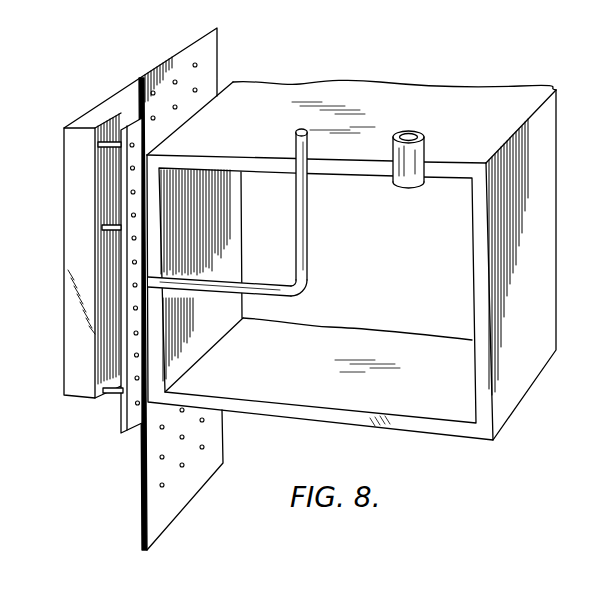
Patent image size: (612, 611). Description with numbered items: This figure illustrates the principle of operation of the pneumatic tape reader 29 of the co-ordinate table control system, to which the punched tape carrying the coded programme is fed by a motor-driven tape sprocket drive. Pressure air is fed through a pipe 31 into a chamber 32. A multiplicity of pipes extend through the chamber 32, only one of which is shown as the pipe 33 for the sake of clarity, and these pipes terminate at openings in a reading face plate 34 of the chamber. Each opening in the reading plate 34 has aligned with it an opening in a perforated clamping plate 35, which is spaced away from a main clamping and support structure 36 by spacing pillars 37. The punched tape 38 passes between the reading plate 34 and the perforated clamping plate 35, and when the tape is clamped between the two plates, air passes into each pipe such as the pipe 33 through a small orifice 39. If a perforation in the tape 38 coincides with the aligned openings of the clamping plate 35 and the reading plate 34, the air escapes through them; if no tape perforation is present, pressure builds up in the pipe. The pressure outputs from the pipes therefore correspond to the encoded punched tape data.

The tape reader 29 is at (275, 68).
The pipe 31 is at (420, 134).
The chamber 32 is at (456, 237).
The pipe 33 is at (309, 221).
The reading face plate 34 is at (143, 293).
The perforated clamping plate 35 is at (127, 362).
The main clamping and support structure 36 is at (77, 222).
The spacing pillars 37 is at (98, 150).
The punched tape 38 is at (173, 65).
The orifice 39 is at (288, 297).